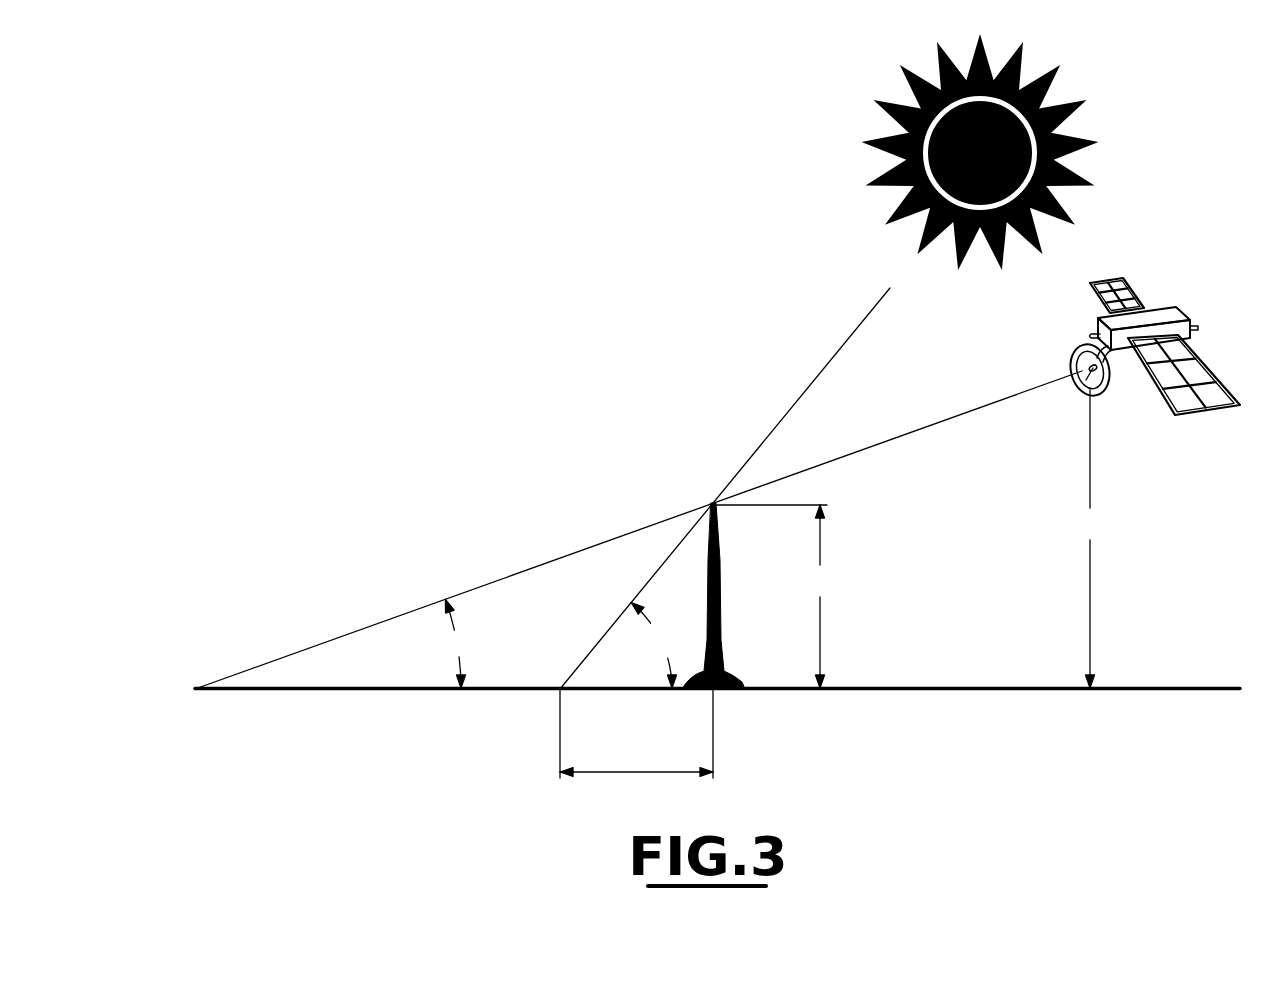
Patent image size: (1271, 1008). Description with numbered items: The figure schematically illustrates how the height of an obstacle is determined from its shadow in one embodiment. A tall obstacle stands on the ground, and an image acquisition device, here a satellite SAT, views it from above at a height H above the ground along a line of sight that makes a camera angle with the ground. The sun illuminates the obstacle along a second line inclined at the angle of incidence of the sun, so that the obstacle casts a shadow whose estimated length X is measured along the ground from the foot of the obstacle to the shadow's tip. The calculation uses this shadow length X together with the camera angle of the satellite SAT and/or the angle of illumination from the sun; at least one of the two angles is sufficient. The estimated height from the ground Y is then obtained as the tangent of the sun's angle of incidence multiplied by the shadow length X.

The satellite SAT is at (1160, 314).
The satellite altitude H is at (1090, 539).
The estimated height from the ground Y is at (770, 597).
The estimated length of the shadow X is at (636, 733).